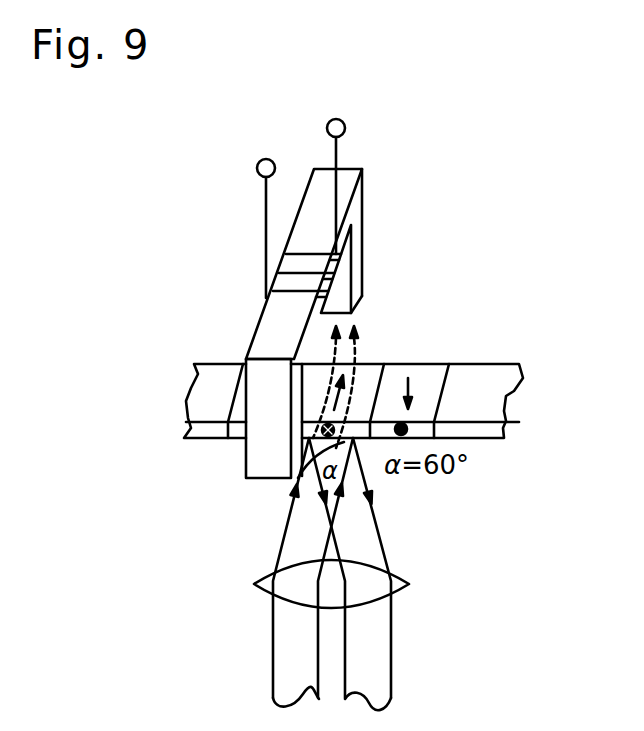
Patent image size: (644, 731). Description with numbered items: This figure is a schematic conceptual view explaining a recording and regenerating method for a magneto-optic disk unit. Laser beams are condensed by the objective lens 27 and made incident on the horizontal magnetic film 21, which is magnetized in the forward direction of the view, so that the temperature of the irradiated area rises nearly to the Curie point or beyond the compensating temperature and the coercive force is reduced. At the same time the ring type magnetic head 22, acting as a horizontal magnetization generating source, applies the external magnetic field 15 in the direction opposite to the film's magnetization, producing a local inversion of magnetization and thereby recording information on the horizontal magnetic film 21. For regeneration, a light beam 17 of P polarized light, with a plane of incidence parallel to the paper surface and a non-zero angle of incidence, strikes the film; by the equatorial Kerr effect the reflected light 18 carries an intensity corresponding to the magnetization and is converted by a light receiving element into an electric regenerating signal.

The external magnetic field 15 is at (387, 273).
The light beam 17 is at (274, 568).
The reflected light 18 is at (398, 568).
The horizontal magnetic film 21 is at (398, 411).
The ring type magnetic head 22 is at (355, 239).
The objective lens 27 is at (384, 593).